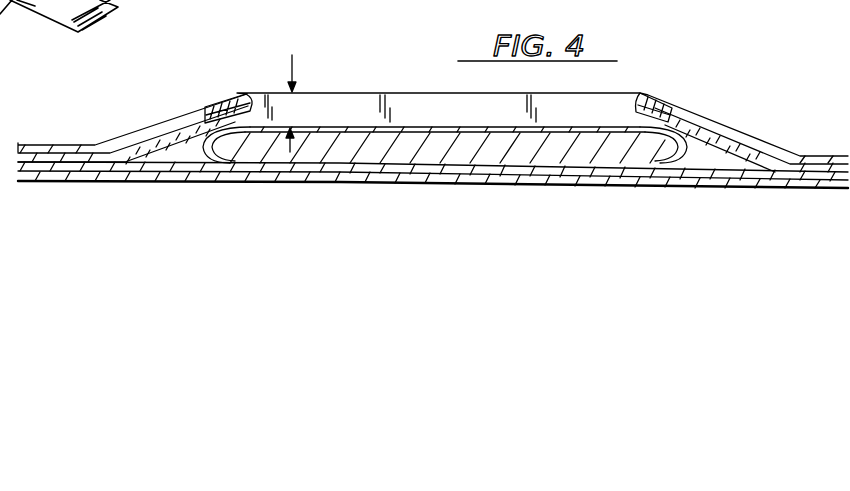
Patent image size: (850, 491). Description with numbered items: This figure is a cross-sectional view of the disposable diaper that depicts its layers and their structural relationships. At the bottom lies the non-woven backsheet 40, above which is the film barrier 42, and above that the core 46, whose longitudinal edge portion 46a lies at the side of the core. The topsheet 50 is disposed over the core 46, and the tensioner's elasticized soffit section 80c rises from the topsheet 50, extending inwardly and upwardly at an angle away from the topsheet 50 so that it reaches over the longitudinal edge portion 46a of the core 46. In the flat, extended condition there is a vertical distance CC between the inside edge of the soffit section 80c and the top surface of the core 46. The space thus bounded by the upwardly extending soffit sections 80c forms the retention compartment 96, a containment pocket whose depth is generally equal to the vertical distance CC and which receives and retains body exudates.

The non-woven backsheet 40 is at (115, 183).
The film barrier 42 is at (243, 174).
The core 46 is at (377, 152).
The longitudinal edge portion of the core 46a is at (170, 123).
The topsheet 50 is at (747, 140).
The elasticized soffit section 80c is at (237, 92).
The retention compartment 96 is at (423, 82).
The vertical distance CC is at (292, 58).